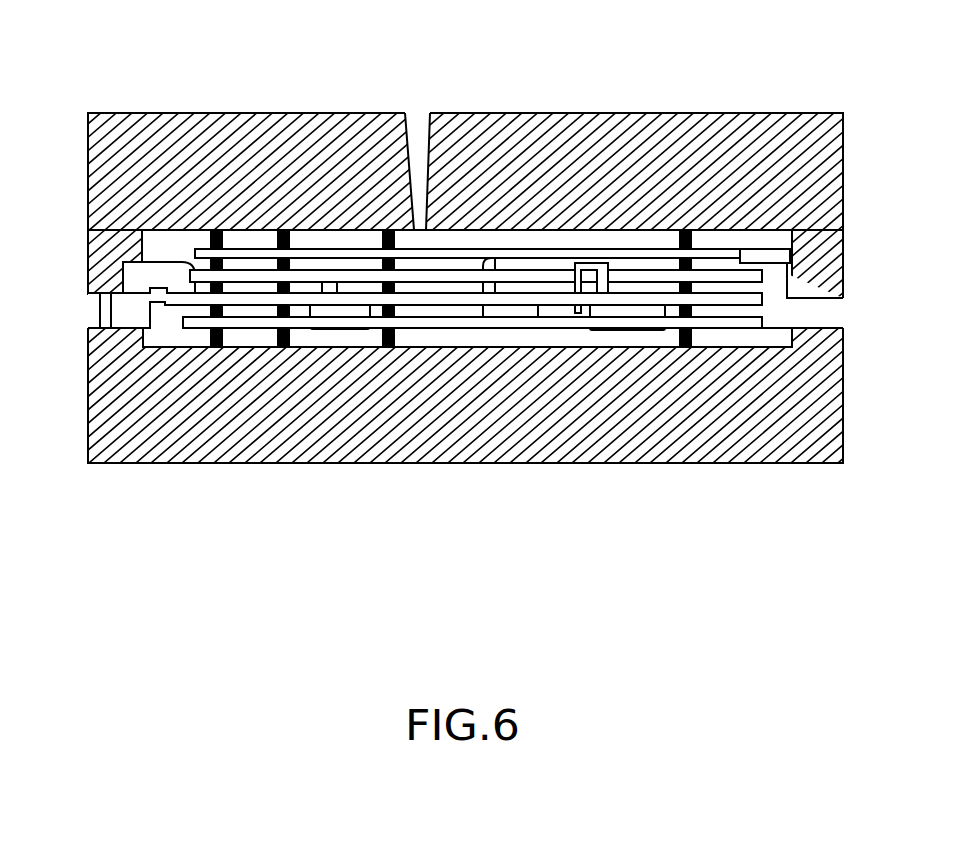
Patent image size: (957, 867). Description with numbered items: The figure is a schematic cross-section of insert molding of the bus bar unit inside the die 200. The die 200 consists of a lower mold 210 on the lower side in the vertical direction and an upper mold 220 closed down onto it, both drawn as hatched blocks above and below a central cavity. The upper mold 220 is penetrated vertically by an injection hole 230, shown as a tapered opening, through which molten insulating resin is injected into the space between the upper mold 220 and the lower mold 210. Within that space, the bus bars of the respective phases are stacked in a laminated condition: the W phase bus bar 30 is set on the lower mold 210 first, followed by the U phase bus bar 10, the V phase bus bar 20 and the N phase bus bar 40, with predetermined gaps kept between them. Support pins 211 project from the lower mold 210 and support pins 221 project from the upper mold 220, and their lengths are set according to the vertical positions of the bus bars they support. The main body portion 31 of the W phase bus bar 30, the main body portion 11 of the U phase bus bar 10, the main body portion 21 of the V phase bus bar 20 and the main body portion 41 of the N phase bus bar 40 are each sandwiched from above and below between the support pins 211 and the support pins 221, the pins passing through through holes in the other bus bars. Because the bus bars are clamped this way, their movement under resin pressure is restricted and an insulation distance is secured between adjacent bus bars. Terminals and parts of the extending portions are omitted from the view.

The die 200 is at (139, 77).
The lower mold 210 is at (805, 410).
The support pins 211 is at (388, 348).
The upper mold 220 is at (803, 160).
The support pins 221 is at (388, 231).
The injection hole 230 is at (425, 113).
The U phase bus bar 10 is at (170, 297).
The main body portion 11 is at (722, 300).
The V phase bus bar 20 is at (182, 270).
The main body portion 21 is at (550, 280).
The W phase bus bar 30 is at (167, 320).
The main body portion 31 is at (443, 322).
The N phase bus bar 40 is at (183, 241).
The main body portion 41 is at (718, 255).